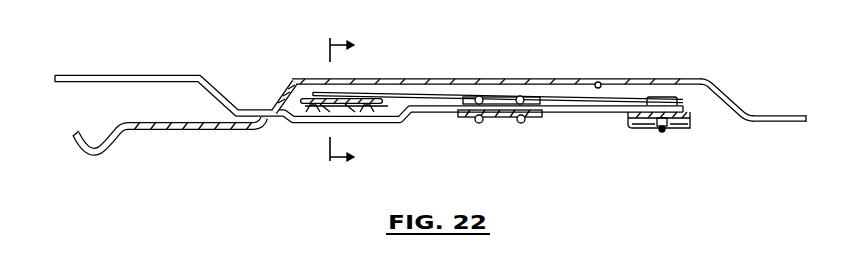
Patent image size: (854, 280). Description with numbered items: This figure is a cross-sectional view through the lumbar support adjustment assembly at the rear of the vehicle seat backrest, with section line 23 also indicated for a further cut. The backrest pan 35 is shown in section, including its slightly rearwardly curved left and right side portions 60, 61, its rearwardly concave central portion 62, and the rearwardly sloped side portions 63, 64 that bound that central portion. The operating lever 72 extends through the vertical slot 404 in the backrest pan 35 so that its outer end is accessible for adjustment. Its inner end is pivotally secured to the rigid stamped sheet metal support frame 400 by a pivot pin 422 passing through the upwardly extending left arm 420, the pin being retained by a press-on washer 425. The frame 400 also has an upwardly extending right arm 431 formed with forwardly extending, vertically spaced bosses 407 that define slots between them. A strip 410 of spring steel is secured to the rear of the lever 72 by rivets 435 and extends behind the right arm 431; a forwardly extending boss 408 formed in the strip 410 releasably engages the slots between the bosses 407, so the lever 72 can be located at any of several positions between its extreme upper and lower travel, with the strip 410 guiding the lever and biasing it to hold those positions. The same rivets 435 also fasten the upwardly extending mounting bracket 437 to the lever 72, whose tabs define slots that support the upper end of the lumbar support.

The lever 72 is at (152, 75).
The right side portion 61 is at (177, 103).
The backrest pan 35 is at (558, 78).
The rearwardly sloped side portion 63 is at (716, 95).
The left side portion 60 is at (797, 114).
The central portion 62 is at (600, 82).
The vertical slot 404 is at (278, 98).
The rearwardly sloped side portion 64 is at (285, 88).
The strip 410 is at (397, 97).
The right arm 431 is at (357, 98).
The bosses 407 is at (333, 112).
The boss 408 is at (340, 93).
The rivets 435 is at (518, 96).
The mounting bracket 437 is at (508, 121).
The support frame 400 is at (706, 109).
The left arm 420 is at (693, 125).
The press-on washer 425 is at (647, 130).
The pivot pin 422 is at (667, 132).
The section line 23- 23 is at (342, 100).